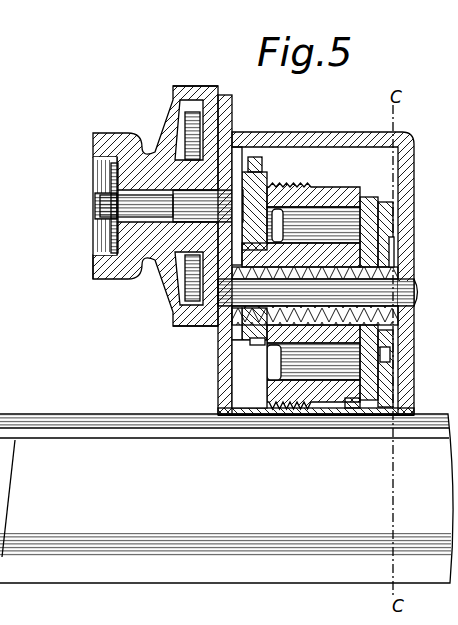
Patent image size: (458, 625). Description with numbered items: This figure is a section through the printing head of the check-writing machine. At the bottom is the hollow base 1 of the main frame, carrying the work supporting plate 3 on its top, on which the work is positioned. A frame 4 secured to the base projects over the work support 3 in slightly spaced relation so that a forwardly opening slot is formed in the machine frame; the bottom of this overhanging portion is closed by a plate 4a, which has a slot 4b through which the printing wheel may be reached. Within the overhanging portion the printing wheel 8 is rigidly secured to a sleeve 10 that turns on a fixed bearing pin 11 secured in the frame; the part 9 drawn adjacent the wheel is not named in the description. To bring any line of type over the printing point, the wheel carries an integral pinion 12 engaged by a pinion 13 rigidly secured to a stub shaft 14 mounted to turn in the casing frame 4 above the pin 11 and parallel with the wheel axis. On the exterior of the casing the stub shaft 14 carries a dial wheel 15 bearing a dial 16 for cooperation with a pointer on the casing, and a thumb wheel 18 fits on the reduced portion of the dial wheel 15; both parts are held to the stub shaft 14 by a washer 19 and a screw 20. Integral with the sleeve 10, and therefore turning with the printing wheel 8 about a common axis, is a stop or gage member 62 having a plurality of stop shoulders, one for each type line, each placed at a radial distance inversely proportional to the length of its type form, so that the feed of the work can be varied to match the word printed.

The hollow base 1 is at (178, 495).
The work supporting plate 3 is at (127, 424).
The frame 4 is at (348, 134).
The plate 4a is at (384, 409).
The slot 4b is at (358, 416).
The printing wheel 8 is at (340, 193).
The knurled bearing block 9 is at (303, 186).
The sleeve 10 is at (352, 267).
The bearing pin 11 is at (376, 293).
The pinion 12 is at (256, 346).
The pinion 13 is at (259, 158).
The stub shaft 14 is at (216, 200).
The dial wheel 15 is at (177, 95).
The dial 16 is at (193, 90).
The thumb wheel 18 is at (127, 273).
The washer 19 is at (118, 234).
The screw 20 is at (104, 208).
The stop or gage member 62 is at (378, 220).